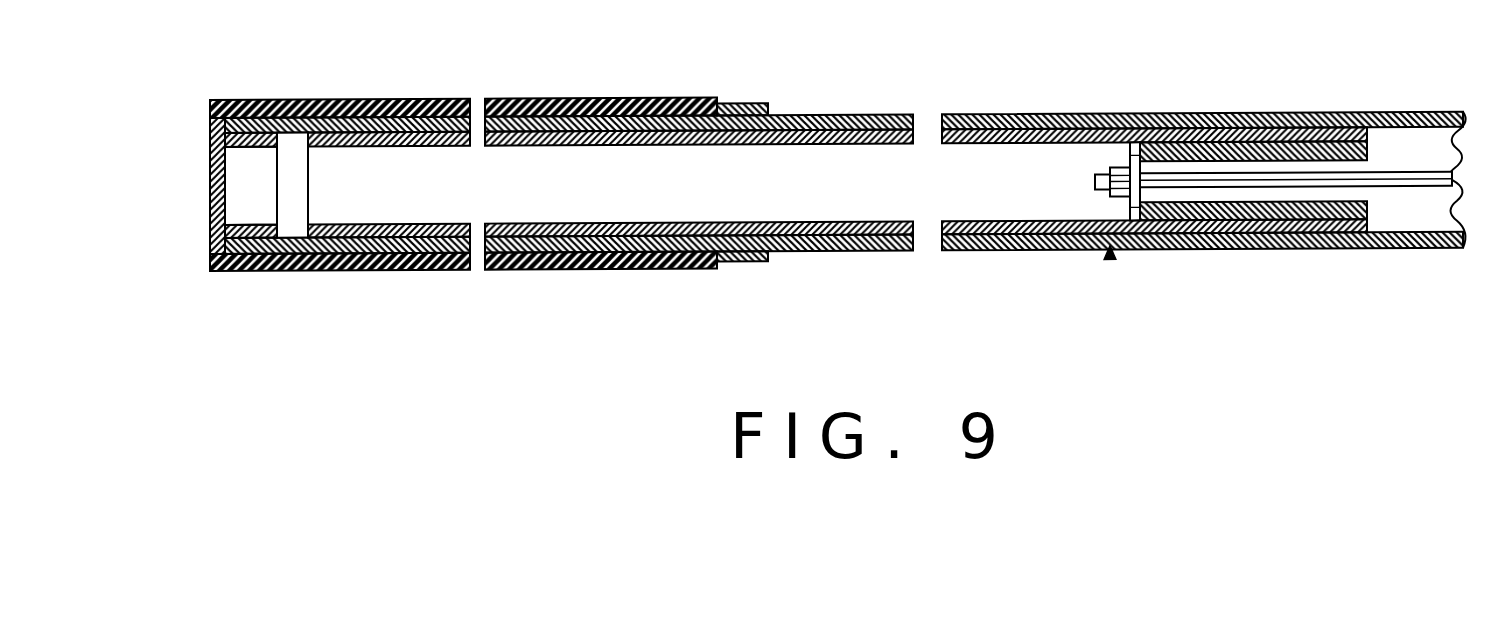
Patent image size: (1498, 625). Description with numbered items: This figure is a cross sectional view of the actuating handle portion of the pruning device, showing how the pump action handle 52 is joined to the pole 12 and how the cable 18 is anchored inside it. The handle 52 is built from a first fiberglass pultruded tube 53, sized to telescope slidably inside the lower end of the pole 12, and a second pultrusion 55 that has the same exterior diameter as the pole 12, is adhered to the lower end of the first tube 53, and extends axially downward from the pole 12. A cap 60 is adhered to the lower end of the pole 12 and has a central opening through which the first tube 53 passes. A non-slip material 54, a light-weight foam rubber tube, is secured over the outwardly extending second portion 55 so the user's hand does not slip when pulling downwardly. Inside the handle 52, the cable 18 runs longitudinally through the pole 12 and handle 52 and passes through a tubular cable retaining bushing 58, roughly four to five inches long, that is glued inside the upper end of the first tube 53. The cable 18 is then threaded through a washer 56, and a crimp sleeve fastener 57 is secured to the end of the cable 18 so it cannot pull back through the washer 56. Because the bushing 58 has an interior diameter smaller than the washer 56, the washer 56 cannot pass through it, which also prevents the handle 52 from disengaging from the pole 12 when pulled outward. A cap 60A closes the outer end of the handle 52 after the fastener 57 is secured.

The pole 12 is at (832, 253).
The cable 18 is at (1243, 183).
The pump action handle 52 is at (382, 146).
The first fiberglass pultruded tube 53 is at (1110, 258).
The non-slip material 54 is at (353, 272).
The second pultrusion 55 is at (318, 112).
The washer 56 is at (1128, 118).
The fastener 57 is at (1115, 168).
The tubular cable retaining bushing 58 is at (1299, 117).
The cap 60 is at (747, 107).
The cap 60A is at (210, 180).